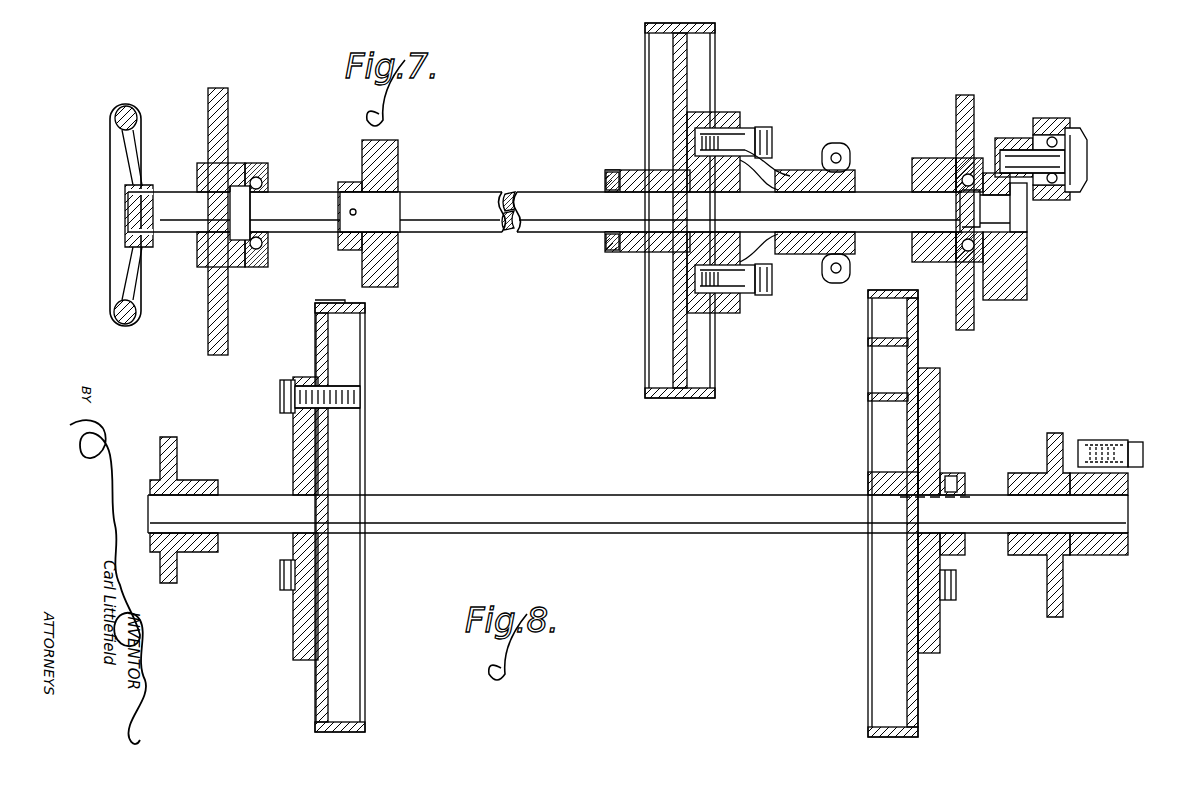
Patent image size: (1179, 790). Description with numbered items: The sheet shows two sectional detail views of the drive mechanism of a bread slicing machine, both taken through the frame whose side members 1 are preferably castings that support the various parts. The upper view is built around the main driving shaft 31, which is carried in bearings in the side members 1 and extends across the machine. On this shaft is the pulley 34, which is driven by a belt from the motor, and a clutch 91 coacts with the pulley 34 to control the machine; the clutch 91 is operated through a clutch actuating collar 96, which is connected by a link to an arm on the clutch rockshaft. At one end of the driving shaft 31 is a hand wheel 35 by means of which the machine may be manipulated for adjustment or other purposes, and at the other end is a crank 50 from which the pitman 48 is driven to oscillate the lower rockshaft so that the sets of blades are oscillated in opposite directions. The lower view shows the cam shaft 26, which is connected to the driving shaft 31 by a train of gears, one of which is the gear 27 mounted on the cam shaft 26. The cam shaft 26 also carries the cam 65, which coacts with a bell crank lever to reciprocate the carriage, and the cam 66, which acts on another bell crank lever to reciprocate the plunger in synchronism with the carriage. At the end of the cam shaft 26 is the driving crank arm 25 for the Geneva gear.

In FIG. 7, the side members 1 is at (208, 320).
In FIG. 8, the side members 1 is at (177, 448).
In FIG. 8, the driving crank arm 25 is at (1128, 483).
In FIG. 8, the cam shaft 26 is at (645, 495).
In FIG. 8, the gear 27 is at (333, 732).
In FIG. 7, the driving shaft 31 is at (421, 240).
In FIG. 7, the pulley 34 is at (664, 398).
In FIG. 7, the hand wheel 35 is at (111, 254).
In FIG. 7, the pitman 48 is at (1044, 122).
In FIG. 7, the crank 50 is at (1028, 230).
In FIG. 8, the cam 65 is at (915, 677).
In FIG. 8, the cam 66 is at (322, 676).
In FIG. 7, the clutch 91 is at (748, 248).
In FIG. 7, the clutch actuating collar 96 is at (815, 185).